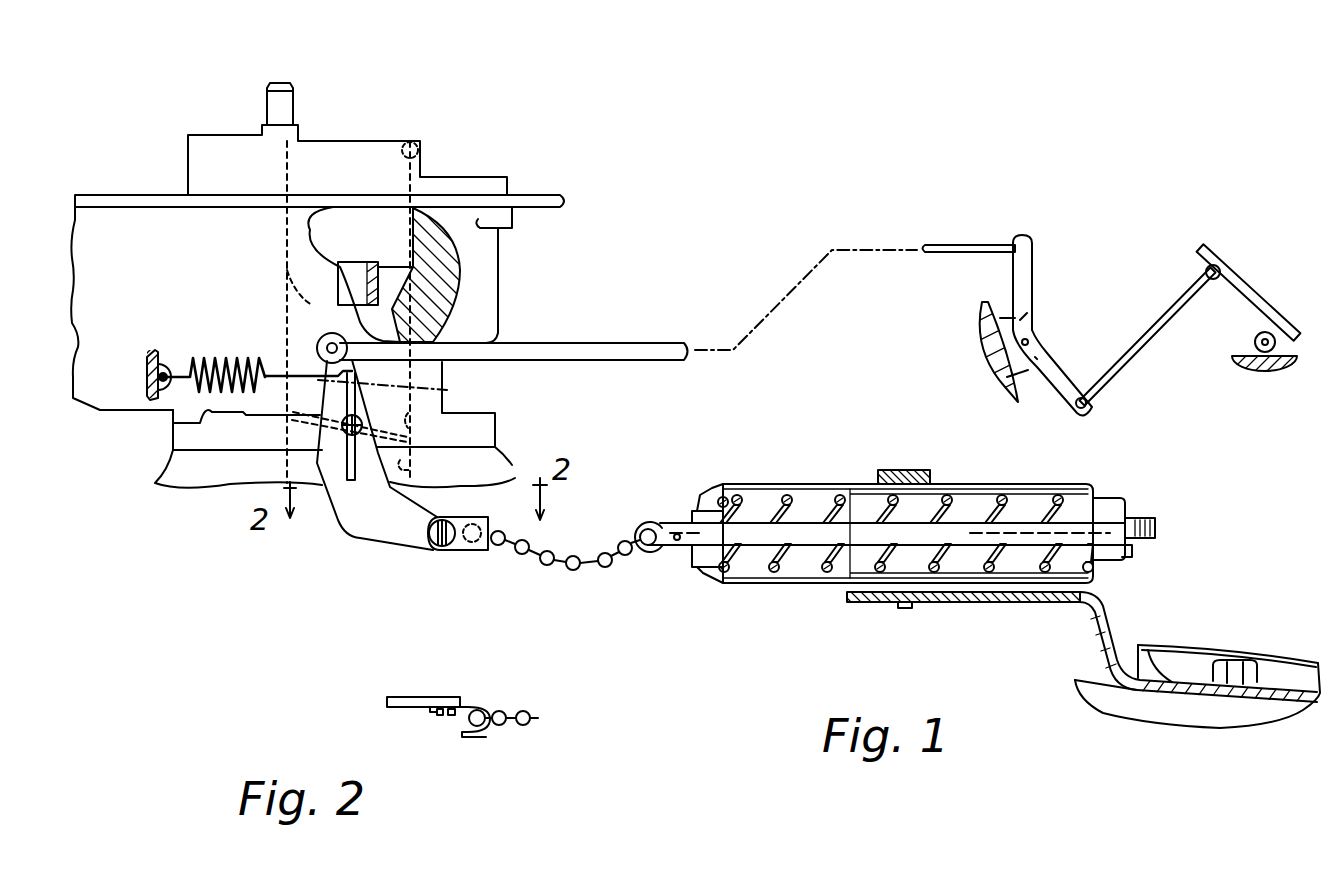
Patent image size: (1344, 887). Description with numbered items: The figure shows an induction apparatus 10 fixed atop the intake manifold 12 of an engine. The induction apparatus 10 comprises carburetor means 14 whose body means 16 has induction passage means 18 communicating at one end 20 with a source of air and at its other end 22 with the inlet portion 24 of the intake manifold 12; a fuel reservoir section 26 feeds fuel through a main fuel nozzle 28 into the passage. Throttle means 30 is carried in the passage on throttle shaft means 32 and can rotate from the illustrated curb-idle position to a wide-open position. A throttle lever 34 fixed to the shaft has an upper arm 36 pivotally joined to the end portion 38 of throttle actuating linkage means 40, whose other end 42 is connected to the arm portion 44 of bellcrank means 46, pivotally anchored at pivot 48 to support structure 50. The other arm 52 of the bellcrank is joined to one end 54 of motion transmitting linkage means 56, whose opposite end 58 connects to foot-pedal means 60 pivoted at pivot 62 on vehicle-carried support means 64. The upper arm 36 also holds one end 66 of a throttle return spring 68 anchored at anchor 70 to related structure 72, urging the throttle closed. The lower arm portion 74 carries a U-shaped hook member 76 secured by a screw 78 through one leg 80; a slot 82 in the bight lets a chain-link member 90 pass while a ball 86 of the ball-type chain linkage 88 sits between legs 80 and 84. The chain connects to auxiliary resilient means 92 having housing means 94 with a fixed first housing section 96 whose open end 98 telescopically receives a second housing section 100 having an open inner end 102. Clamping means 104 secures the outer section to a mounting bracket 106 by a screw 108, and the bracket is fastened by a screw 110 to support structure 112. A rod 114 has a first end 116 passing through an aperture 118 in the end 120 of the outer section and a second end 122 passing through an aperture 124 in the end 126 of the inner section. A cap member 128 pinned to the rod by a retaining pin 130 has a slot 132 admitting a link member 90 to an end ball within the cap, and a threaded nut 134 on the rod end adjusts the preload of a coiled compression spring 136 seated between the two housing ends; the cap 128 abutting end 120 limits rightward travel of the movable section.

In FIG. 1, the induction apparatus 10 is at (515, 158).
In FIG. 1, the intake manifold 12 is at (512, 465).
In FIG. 1, the carburetor means 14 is at (517, 267).
In FIG. 1, the body means 16 is at (500, 320).
In FIG. 1, the induction passage means 18 is at (292, 160).
In FIG. 1, the one end 20 is at (418, 148).
In FIG. 1, the other end 22 is at (288, 448).
In FIG. 1, the inlet portion 24 is at (415, 466).
In FIG. 1, the fuel reservoir section 26 is at (95, 278).
In FIG. 1, the main fuel nozzle 28 is at (382, 265).
In FIG. 1, the throttle means 30 is at (292, 415).
In FIG. 1, the throttle shaft means 32 is at (350, 435).
In FIG. 1, the throttle lever 34 is at (336, 525).
In FIG. 1, the upper arm 36 is at (318, 345).
In FIG. 1, the end portion 38 is at (329, 331).
In FIG. 1, the throttle actuating linkage means 40 is at (672, 345).
In FIG. 1, the other end 42 is at (1025, 238).
In FIG. 1, the arm portion 44 is at (1032, 255).
In FIG. 1, the lever or bellcrank means 46 is at (1045, 292).
In FIG. 1, the pivotal anchor 48 is at (1030, 342).
In FIG. 1, the support structure 50 is at (1000, 312).
In FIG. 1, the other arm 52 is at (1060, 370).
In FIG. 1, the one end 54 is at (1085, 410).
In FIG. 1, the motion transmitting linkage means 56 is at (1140, 320).
In FIG. 1, the opposite end 58 is at (1215, 262).
In FIG. 1, the foot-pedal means 60 is at (1255, 292).
In FIG. 1, the pivot 62 is at (1265, 354).
In FIG. 1, the vehicle-carried support means 64 is at (1253, 343).
In FIG. 1, the one end of throttle return spring 66 is at (340, 378).
In FIG. 1, the throttle return spring 68 is at (230, 358).
In FIG. 1, the anchor 70 is at (160, 362).
In FIG. 1, the related structure 72 is at (147, 398).
In FIG. 1, the lower arm portion 74 is at (365, 545).
In FIG. 2, the lower arm portion 74 is at (395, 697).
In FIG. 1, the U-shaped hook member 76 is at (435, 562).
In FIG. 2, the U-shaped hook member 76 is at (471, 692).
In FIG. 1, the screw 78 is at (430, 530).
In FIG. 2, the screw 78 is at (438, 715).
In FIG. 2, the one leg 80 is at (428, 710).
In FIG. 2, the slot 82 is at (497, 712).
In FIG. 1, the leg 84 is at (495, 530).
In FIG. 2, the leg 84 is at (475, 728).
In FIG. 1, the ball 86 is at (470, 545).
In FIG. 2, the ball 86 is at (452, 716).
In FIG. 1, the ball-type chain motion transmitting linkage 88 is at (554, 580).
In FIG. 1, the chain-link member 90 is at (530, 553).
In FIG. 2, the chain-link member 90 is at (524, 725).
In FIG. 1, the auxiliary resilient means 92 is at (816, 608).
In FIG. 1, the housing means 94 is at (814, 472).
In FIG. 1, the first housing section 96 is at (775, 484).
In FIG. 1, the open end 98 is at (958, 484).
In FIG. 1, the second housing section 100 is at (1045, 472).
In FIG. 1, the open inner end 102 is at (848, 586).
In FIG. 1, the clamping or strap means 104 is at (910, 470).
In FIG. 1, the mounting bracket 106 is at (1080, 602).
In FIG. 1, the screw 108 is at (905, 610).
In FIG. 1, the screw 110 is at (1250, 665).
In FIG. 1, the support structure 112 is at (1150, 715).
In FIG. 1, the rod 114 is at (862, 525).
In FIG. 1, the first end of rod 116 is at (668, 548).
In FIG. 1, the aperture 118 is at (718, 510).
In FIG. 1, the end of housing section 96 120 is at (697, 575).
In FIG. 1, the second end of rod 122 is at (1155, 530).
In FIG. 1, the aperture 124 is at (1112, 503).
In FIG. 1, the end of housing section 100 126 is at (1132, 557).
In FIG. 1, the cap member 128 is at (638, 525).
In FIG. 1, the retaining pin 130 is at (677, 534).
In FIG. 1, the slot 132 is at (645, 545).
In FIG. 1, the threaded nut 134 is at (1127, 517).
In FIG. 1, the coiled compression spring 136 is at (765, 572).